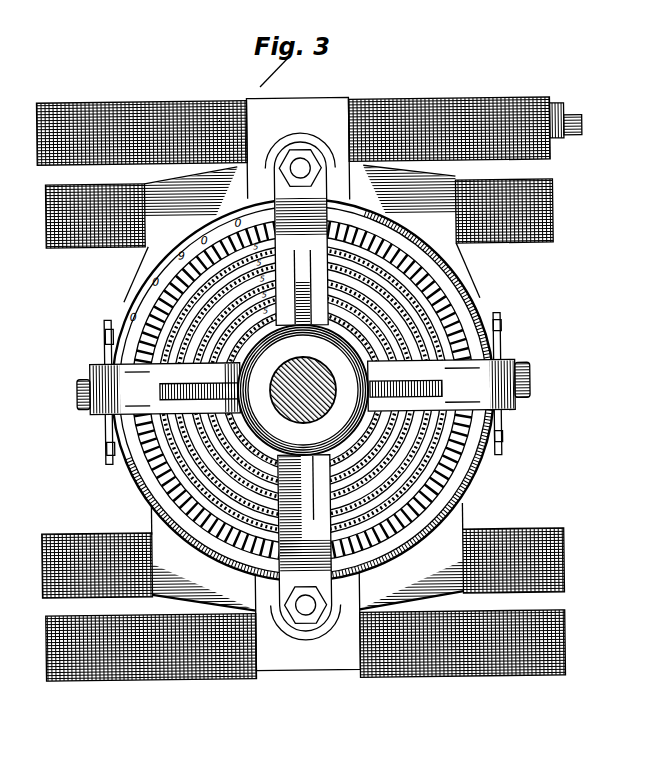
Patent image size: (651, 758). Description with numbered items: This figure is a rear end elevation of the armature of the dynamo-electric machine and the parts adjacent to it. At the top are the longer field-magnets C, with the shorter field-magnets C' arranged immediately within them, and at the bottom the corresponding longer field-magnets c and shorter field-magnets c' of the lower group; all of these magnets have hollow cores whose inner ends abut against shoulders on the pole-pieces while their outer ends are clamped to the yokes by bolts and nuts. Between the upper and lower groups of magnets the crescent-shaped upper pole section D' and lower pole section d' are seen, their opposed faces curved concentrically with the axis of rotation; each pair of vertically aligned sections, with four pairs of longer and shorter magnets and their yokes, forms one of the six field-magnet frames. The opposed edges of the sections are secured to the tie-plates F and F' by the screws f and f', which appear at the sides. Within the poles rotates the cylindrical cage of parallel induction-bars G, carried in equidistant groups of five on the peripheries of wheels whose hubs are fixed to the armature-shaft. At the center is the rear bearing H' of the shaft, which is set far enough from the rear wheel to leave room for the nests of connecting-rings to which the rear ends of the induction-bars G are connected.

The longer field-magnets C is at (309, 119).
The shorter field-magnets C' is at (286, 202).
The longer field-magnets c is at (298, 636).
The shorter field-magnets c' is at (294, 553).
The upper pole section D' is at (298, 211).
The lower pole section d' is at (307, 562).
The induction-bars G is at (356, 231).
The bearing H' is at (303, 390).
The tie-plate F is at (449, 371).
The tie-plate F' is at (158, 379).
The screws f is at (512, 377).
The screws f' is at (96, 391).